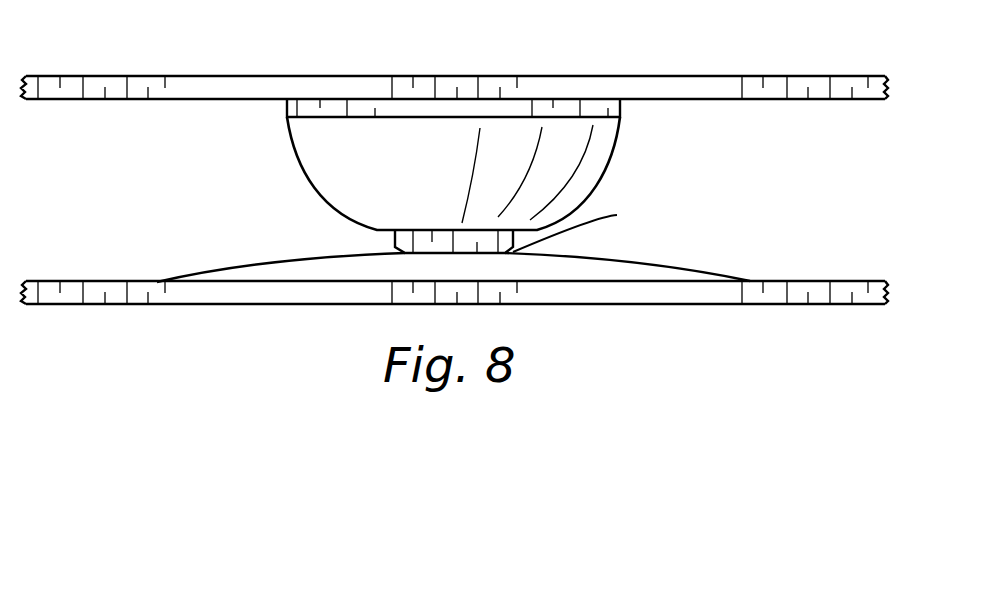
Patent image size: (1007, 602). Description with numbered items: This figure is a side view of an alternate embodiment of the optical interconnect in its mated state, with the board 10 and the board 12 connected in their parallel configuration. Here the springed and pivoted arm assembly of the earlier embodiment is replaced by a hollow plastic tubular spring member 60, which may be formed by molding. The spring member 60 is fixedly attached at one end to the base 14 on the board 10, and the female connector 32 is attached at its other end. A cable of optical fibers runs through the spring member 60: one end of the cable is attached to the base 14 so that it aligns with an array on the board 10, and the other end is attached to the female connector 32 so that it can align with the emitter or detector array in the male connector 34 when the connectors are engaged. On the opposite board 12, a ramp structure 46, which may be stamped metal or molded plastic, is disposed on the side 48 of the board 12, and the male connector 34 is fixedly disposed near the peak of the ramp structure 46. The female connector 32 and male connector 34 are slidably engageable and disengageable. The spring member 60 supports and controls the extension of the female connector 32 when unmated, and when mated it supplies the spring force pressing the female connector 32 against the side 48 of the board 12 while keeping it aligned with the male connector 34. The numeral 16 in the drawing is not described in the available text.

The board 10 is at (117, 76).
The board 12 is at (92, 305).
The base 14 is at (622, 105).
The upper plate inner surface 16 is at (815, 100).
The female connector 32 is at (364, 244).
The male connector 34 is at (617, 215).
The ramp structure 46 is at (245, 264).
The side of board 48 is at (840, 280).
The hollow plastic tubular spring member 60 is at (296, 157).